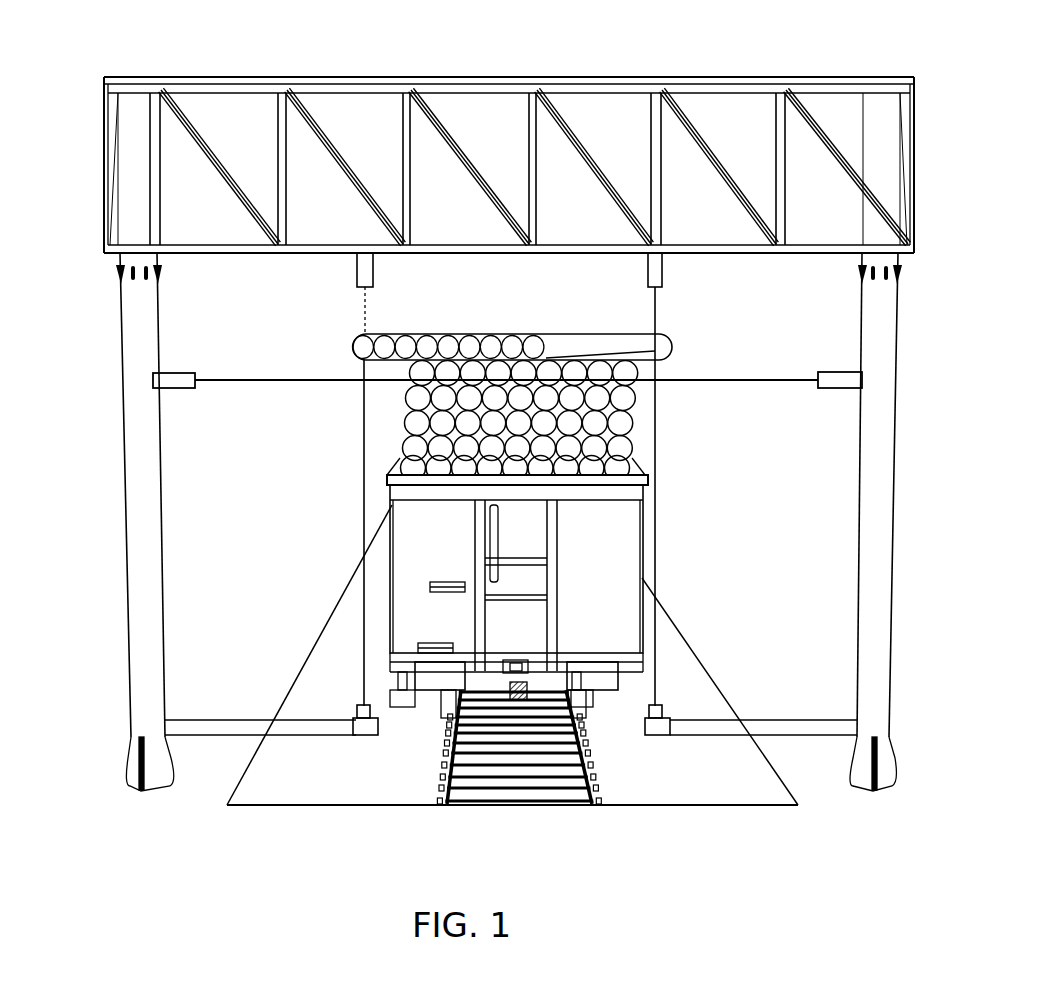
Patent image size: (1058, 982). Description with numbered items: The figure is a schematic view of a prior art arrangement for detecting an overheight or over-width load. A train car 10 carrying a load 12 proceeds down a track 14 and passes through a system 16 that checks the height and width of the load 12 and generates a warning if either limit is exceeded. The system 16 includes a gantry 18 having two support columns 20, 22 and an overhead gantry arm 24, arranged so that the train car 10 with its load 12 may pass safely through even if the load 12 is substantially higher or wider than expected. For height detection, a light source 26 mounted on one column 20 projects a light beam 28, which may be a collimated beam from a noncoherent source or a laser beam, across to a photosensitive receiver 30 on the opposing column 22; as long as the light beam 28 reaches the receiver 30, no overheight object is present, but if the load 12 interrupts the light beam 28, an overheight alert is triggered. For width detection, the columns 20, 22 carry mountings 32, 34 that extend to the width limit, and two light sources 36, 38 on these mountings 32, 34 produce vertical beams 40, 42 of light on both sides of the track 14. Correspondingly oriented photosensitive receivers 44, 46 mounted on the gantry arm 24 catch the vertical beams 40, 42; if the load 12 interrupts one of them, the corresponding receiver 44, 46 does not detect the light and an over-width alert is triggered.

The train car 10 is at (636, 553).
The load 12 is at (600, 374).
The track 14 is at (527, 796).
The system 16 is at (506, 380).
The gantry 18 is at (112, 148).
The support column 20 is at (129, 548).
The support column 22 is at (884, 543).
The overhead gantry arm 24 is at (603, 77).
The light source 26 is at (185, 373).
The light beam 28 is at (250, 382).
The photosensitive receiver 30 is at (862, 382).
The mounting 32 is at (196, 720).
The mounting 34 is at (798, 720).
The light source 36 is at (356, 736).
The light source 38 is at (660, 736).
The vertical beam 40 is at (363, 456).
The vertical beam 42 is at (657, 522).
The photosensitive receiver 44 is at (357, 268).
The photosensitive receiver 46 is at (662, 270).